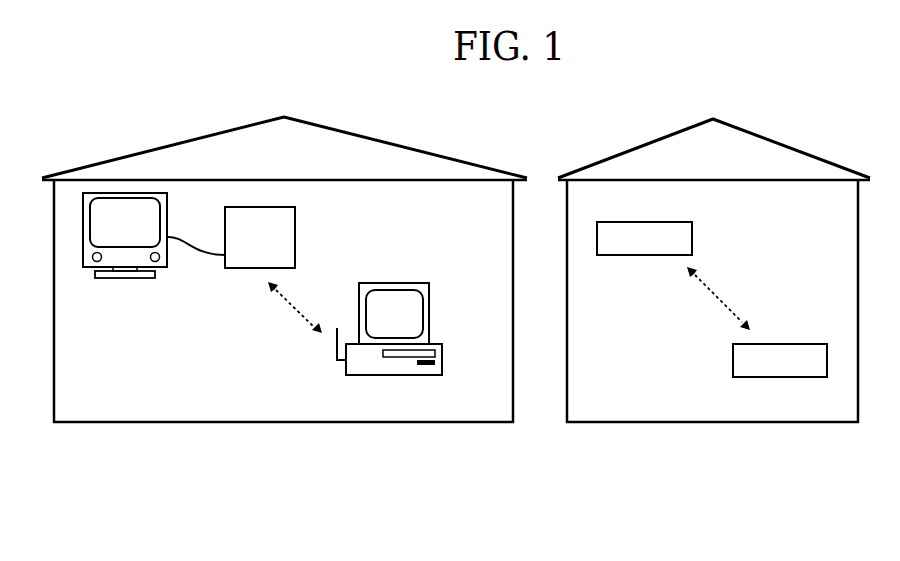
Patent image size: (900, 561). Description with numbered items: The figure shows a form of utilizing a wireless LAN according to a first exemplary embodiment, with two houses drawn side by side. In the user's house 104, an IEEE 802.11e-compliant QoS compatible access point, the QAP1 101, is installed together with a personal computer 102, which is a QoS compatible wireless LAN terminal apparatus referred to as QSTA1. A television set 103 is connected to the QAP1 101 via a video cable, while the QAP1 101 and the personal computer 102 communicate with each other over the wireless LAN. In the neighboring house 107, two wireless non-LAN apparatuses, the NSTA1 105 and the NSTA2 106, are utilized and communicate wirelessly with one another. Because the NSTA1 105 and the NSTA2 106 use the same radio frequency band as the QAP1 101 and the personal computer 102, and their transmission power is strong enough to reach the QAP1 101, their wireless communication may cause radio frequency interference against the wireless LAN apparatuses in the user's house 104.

The QoS compatible access point (QAP1) 101 is at (243, 268).
The personal computer (QSTA1) 102 is at (418, 375).
The television set 103 is at (122, 280).
The user's house 104 is at (240, 423).
The NSTA1 105 is at (643, 255).
The NSTA2 106 is at (787, 343).
The neighboring house 107 is at (693, 422).